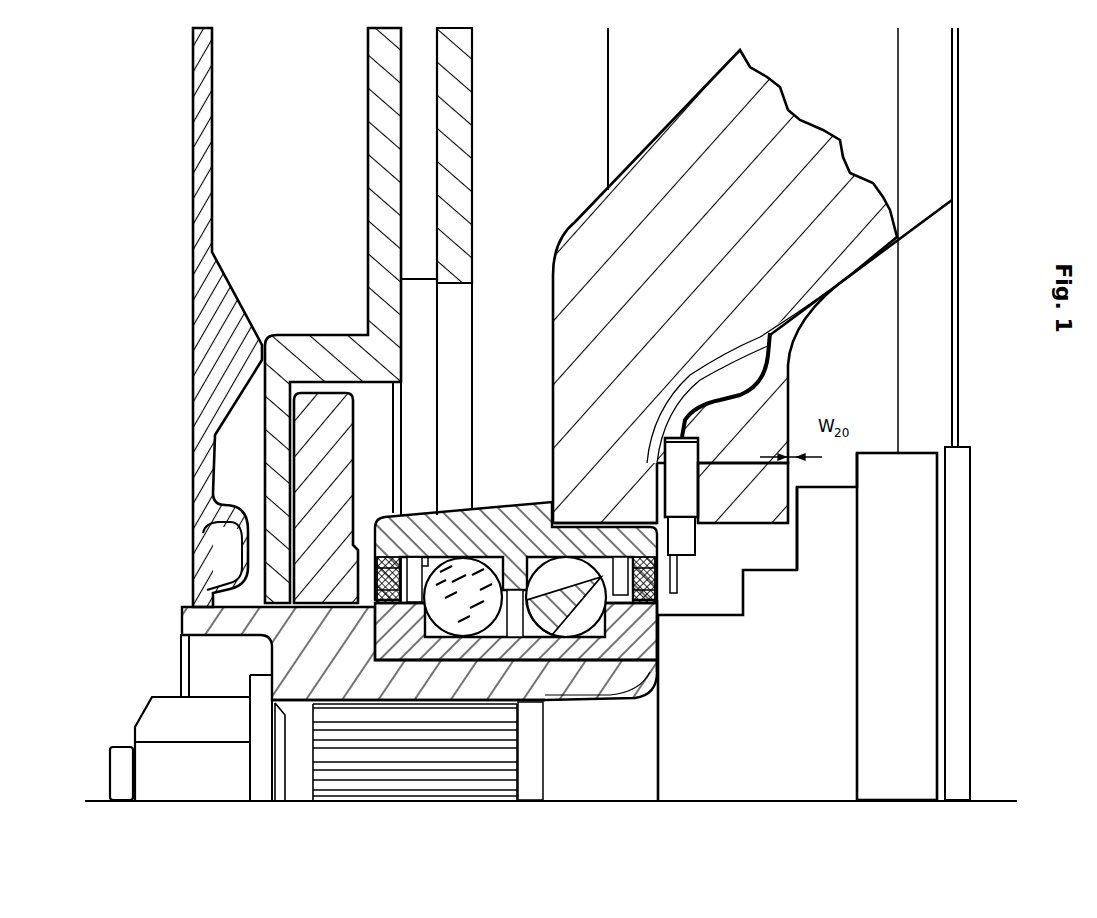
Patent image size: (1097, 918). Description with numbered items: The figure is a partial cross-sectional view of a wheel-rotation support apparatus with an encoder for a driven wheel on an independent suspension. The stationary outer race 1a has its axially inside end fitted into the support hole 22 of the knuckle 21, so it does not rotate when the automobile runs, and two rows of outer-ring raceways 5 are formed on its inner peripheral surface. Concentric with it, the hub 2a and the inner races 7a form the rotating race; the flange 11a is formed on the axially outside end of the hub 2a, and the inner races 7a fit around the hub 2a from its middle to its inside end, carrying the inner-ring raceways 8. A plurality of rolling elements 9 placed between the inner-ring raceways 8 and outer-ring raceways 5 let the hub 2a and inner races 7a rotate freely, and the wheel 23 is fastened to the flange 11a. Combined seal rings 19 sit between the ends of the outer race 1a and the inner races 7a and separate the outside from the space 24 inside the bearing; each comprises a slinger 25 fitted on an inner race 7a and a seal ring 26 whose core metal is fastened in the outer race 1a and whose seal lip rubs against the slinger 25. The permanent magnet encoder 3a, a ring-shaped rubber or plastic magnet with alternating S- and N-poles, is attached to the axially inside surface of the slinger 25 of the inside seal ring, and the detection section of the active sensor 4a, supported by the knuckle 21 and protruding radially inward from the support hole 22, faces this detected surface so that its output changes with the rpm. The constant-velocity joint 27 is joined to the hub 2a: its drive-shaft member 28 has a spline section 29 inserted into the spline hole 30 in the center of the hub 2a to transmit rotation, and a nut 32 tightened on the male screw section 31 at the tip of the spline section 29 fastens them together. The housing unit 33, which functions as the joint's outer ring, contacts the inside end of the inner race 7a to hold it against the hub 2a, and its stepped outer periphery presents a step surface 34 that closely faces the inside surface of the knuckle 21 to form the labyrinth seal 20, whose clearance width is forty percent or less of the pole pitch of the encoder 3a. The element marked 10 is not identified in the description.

The outer race 1a is at (515, 540).
The hub 2a is at (310, 668).
The permanent magnet encoder 3a is at (665, 582).
The active sensor 4a is at (625, 500).
The outer-ring raceways 5 is at (445, 478).
The inner races 7a is at (415, 662).
The inner-ring raceways 8 is at (470, 700).
The rolling elements 9 is at (497, 562).
The inner ring shoulder 10 is at (503, 700).
The flange 11a is at (320, 440).
The combined seal rings 19 is at (375, 592).
The labyrinth seal 20 is at (795, 502).
The knuckle 21 is at (822, 167).
The support hole 22 is at (733, 400).
The wheel 23 is at (200, 152).
The space inside the bearing 24 is at (545, 702).
The slinger 25 is at (368, 555).
The seal ring 26 is at (392, 548).
The constant-velocity joint 27 is at (912, 451).
The drive-shaft member 28 is at (727, 762).
The spline section 29 is at (345, 750).
The spline hole 30 is at (313, 707).
The male screw section 31 is at (128, 775).
The nut 32 is at (210, 775).
The housing unit 33 is at (903, 542).
The step surface 34 is at (798, 508).